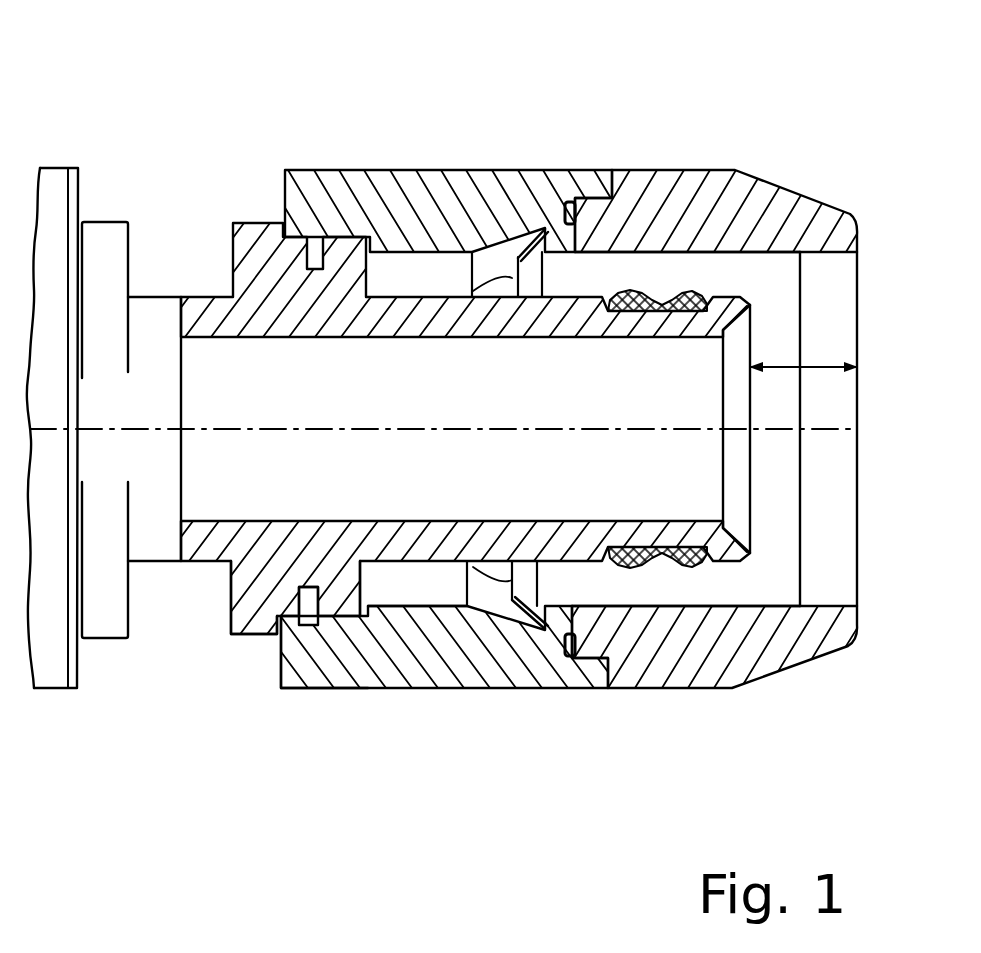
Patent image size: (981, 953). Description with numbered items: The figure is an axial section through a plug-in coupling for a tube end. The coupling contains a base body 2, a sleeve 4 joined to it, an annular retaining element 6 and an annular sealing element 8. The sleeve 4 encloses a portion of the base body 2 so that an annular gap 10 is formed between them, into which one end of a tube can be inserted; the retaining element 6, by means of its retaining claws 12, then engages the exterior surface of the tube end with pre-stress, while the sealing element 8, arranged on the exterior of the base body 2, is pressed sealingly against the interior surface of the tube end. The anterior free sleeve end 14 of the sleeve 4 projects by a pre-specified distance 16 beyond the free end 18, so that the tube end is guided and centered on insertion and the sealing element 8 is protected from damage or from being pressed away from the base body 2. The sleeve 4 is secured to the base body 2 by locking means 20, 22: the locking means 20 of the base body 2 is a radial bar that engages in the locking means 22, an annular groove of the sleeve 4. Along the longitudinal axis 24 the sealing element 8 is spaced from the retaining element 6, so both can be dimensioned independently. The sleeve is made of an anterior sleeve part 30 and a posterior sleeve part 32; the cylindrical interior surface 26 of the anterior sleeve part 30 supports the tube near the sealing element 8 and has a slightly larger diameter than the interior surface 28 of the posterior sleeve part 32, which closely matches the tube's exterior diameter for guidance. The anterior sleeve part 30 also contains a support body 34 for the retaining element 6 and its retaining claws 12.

The base body 2 is at (237, 270).
The sleeve 4 is at (412, 167).
The retaining element 6 is at (551, 212).
The sealing element 8 is at (630, 292).
The annular gap 10 is at (688, 278).
The retaining claws 12 is at (527, 250).
The anterior free sleeve end 14 is at (859, 250).
The pre-specified distance 16 is at (835, 360).
The free end 18 is at (752, 490).
The locking means 20 is at (340, 623).
The locking means 22 is at (297, 637).
The longitudinal axis 24 is at (151, 430).
The interior surface 26 is at (733, 607).
The interior surface 28 is at (427, 607).
The anterior sleeve part 30 is at (685, 650).
The posterior sleeve part 32 is at (460, 668).
The support body 34 is at (570, 613).